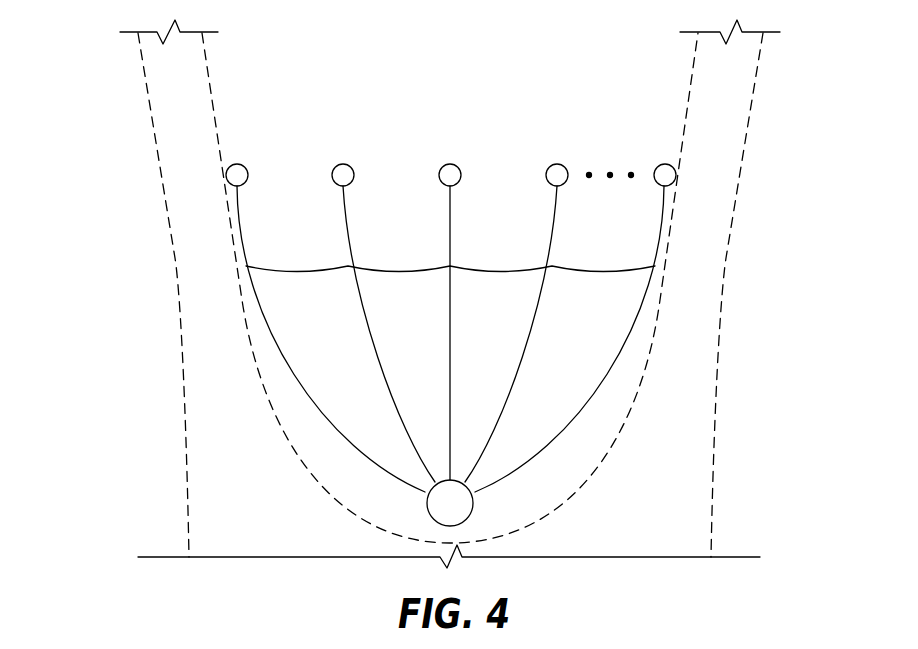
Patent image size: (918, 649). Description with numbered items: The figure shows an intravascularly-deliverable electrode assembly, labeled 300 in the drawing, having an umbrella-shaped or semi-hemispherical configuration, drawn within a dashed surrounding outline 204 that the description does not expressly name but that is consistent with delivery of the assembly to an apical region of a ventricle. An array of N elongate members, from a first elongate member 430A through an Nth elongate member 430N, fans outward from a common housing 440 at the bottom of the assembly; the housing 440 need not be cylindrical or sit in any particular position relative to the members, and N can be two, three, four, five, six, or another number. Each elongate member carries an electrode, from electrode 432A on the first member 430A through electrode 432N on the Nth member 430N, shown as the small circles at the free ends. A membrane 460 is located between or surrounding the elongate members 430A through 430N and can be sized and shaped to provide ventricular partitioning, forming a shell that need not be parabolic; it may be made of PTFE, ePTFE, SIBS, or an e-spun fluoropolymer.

The device 300 is at (373, 288).
The body wall 204 is at (705, 280).
The first elongate member 430A is at (289, 367).
The Nth elongate member 430N is at (611, 368).
The electrode 432A is at (240, 164).
The Nth electrode 432N is at (664, 163).
The housing 440 is at (474, 502).
The membrane 460 is at (543, 408).